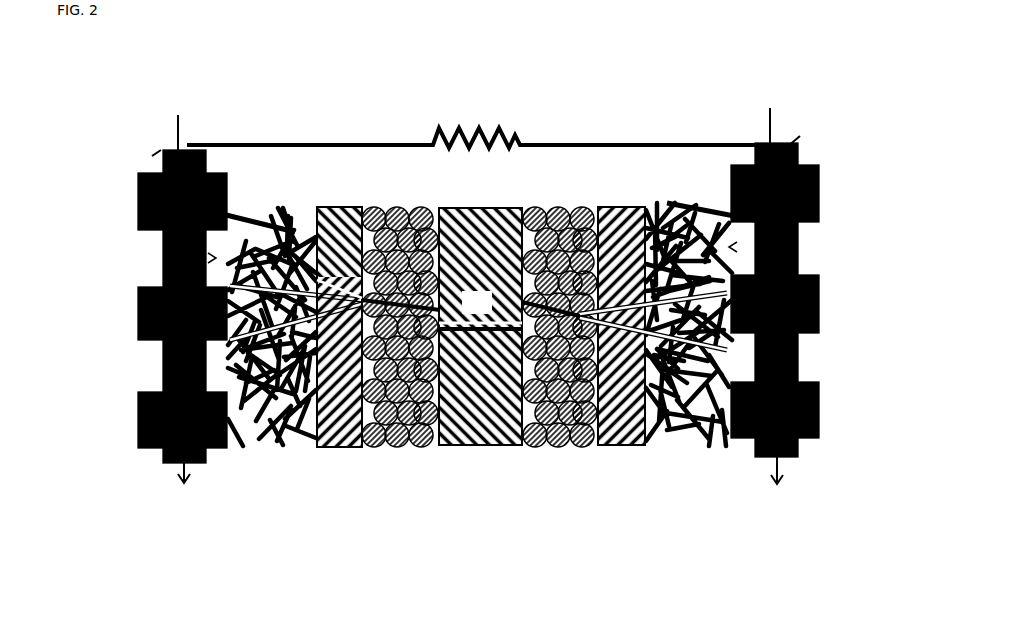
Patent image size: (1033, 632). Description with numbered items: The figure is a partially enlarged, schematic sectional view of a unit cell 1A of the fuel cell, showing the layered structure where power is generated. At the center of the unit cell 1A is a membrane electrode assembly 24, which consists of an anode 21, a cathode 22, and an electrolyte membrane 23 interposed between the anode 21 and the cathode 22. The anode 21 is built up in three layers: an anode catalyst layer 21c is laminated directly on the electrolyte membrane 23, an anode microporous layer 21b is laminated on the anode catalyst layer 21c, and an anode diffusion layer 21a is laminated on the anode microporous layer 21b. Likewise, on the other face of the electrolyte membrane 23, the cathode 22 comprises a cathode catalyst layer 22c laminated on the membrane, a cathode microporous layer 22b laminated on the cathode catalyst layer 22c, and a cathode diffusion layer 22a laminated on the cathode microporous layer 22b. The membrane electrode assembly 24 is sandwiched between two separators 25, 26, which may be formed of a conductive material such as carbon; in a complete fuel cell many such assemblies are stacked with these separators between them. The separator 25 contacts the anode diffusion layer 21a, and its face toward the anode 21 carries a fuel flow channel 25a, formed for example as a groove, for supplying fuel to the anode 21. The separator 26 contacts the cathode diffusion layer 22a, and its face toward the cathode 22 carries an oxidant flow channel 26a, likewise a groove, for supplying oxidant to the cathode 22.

The unit cell 1A is at (731, 51).
The anode 21 is at (438, 458).
The anode diffusion layer 21a is at (267, 213).
The anode microporous layer 21b is at (327, 207).
The anode catalyst layer 21c is at (382, 220).
The cathode 22 is at (737, 453).
The cathode diffusion layer 22a is at (677, 202).
The cathode microporous layer 22b is at (622, 205).
The cathode catalyst layer 22c is at (568, 220).
The electrolyte membrane 23 is at (477, 445).
The membrane electrode assembly 24 is at (737, 508).
The separator 25 is at (138, 186).
The fuel flow channel 25a is at (220, 447).
The separator 26 is at (807, 447).
The oxidant flow channel 26a is at (747, 435).